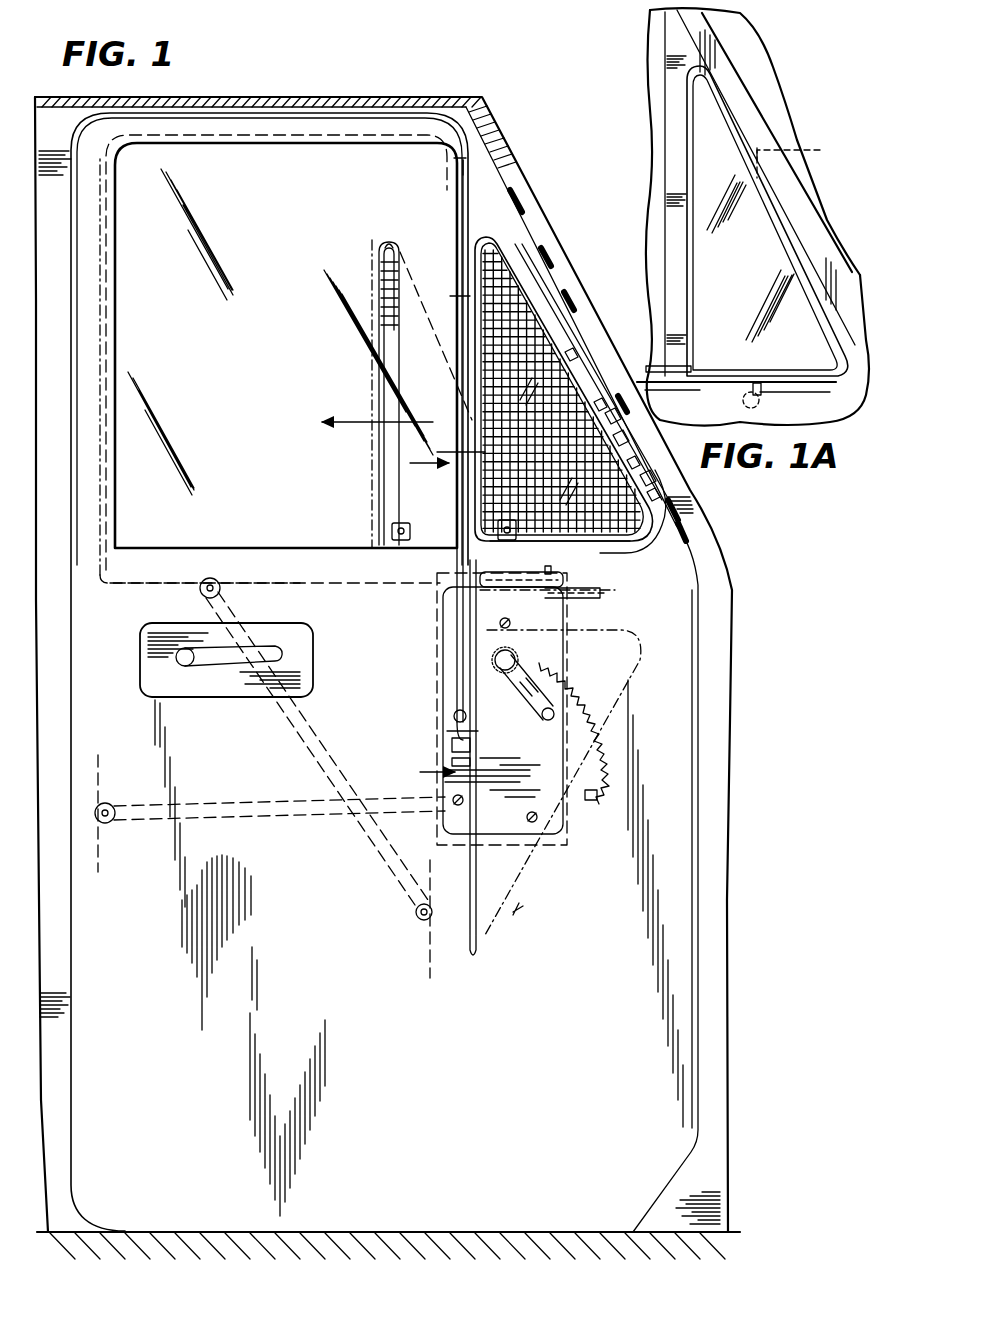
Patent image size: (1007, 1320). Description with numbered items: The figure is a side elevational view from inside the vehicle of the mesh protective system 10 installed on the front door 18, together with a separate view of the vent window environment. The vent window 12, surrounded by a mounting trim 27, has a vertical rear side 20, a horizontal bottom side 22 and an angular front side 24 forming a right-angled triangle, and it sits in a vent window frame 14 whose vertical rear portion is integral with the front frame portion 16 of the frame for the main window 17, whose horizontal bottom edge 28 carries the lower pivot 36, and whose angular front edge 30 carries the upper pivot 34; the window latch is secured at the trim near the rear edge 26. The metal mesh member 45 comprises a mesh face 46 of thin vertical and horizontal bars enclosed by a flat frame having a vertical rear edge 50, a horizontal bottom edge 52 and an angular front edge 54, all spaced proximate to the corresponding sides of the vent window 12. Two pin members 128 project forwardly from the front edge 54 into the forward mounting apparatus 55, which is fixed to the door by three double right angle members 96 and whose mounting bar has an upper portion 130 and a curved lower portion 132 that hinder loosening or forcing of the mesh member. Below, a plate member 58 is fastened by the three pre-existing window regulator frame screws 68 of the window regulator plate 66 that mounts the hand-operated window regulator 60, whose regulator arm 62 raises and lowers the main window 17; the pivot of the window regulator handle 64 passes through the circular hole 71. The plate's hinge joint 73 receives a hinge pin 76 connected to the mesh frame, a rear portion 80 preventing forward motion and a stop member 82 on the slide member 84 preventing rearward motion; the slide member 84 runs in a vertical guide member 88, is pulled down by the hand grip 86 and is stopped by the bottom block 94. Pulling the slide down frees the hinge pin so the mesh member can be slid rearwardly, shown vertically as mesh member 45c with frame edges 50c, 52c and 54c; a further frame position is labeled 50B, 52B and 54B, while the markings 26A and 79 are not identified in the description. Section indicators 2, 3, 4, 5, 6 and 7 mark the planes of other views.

In FIG. 1, the mesh protective system 10 is at (738, 684).
In FIG. 1, the vent window 12 is at (522, 306).
In FIG. 1A, the vent window 12 is at (750, 261).
In FIG. 1A, the vent window frame 14 is at (792, 208).
In FIG. 1A, the front frame portion 16 is at (668, 157).
In FIG. 1, the main window 17 is at (256, 354).
In FIG. 1A, the main window 17 is at (668, 187).
In FIG. 1, the front door 18 is at (313, 897).
In FIG. 1A, the front door 18 is at (832, 398).
In FIG. 1, the vertical rear side 20 is at (456, 440).
In FIG. 1A, the vertical rear side 20 is at (684, 240).
In FIG. 1A, the horizontal bottom side 22 is at (714, 387).
In FIG. 1A, the angular front side 24 is at (845, 243).
In FIG. 1, the rear edge 26 is at (460, 417).
In FIG. 1, the regulator shaft 26A is at (482, 764).
In FIG. 1A, the mounting trim 27 is at (700, 312).
In FIG. 1A, the horizontal bottom edge 28 is at (835, 413).
In FIG. 1, the angular front edge 30 is at (583, 326).
In FIG. 1A, the angular front edge 30 is at (684, 362).
In FIG. 1, the upper pivot 34 is at (620, 415).
In FIG. 1A, the upper pivot 34 is at (803, 158).
In FIG. 1, the lower pivot 36 is at (545, 567).
In FIG. 1A, the lower pivot 36 is at (760, 401).
In FIG. 1, the metal mesh member 45 is at (416, 452).
In FIG. 1, the mesh member in removed position 45c is at (372, 396).
In FIG. 1, the mesh face 46 is at (651, 449).
In FIG. 1, the vertical rear edge 50 is at (464, 346).
In FIG. 1A, the vertical rear edge 50 is at (722, 96).
In FIG. 1, the lower channel 50B is at (473, 880).
In FIG. 1, the rear edge in removed position 50c is at (378, 282).
In FIG. 1, the horizontal bottom edge 52 is at (564, 550).
In FIG. 1, the arm motion path 52B is at (616, 630).
In FIG. 1, the bottom edge in removed position 52c is at (403, 546).
In FIG. 1, the angular front edge 54 is at (584, 380).
In FIG. 1, the pivot axis 54B is at (518, 884).
In FIG. 1, the front edge in removed position 54c is at (393, 242).
In FIG. 1, the forward mounting apparatus 55 is at (572, 296).
In FIG. 1, the plate member 58 is at (540, 730).
In FIG. 1, the window regulator 60 is at (588, 799).
In FIG. 1, the window regulator arm 62 is at (322, 797).
In FIG. 1, the window regulator handle 64 is at (547, 690).
In FIG. 1, the window regulator plate 66 is at (440, 843).
In FIG. 1, the window regulator frame screws 68 is at (508, 622).
In FIG. 1, the circular hole 71 is at (516, 658).
In FIG. 1, the hinge joint 73 is at (563, 590).
In FIG. 1, the hinge pin 76 is at (600, 557).
In FIG. 1, the channel lip 79 is at (462, 296).
In FIG. 1, the rear portion 80 is at (507, 578).
In FIG. 1, the stop member 82 is at (440, 584).
In FIG. 1, the slide member 84 is at (463, 650).
In FIG. 1, the hand grip 86 is at (472, 724).
In FIG. 1, the vertical guide member 88 is at (442, 676).
In FIG. 1, the bottom block 94 is at (457, 754).
In FIG. 1, the double right angle members 96 is at (514, 199).
In FIG. 1, the pin members 128 is at (556, 264).
In FIG. 1, the upper portion 130 is at (463, 165).
In FIG. 1, the lower portion 132 is at (652, 554).
In FIG. 1, the section line 2 is at (455, 497).
In FIG. 1, the section line 3 is at (408, 512).
In FIG. 1, the section line 4 is at (418, 688).
In FIG. 1, the section line 5 is at (420, 593).
In FIG. 1, the section line 6 is at (511, 188).
In FIG. 1, the section line 7 is at (519, 192).